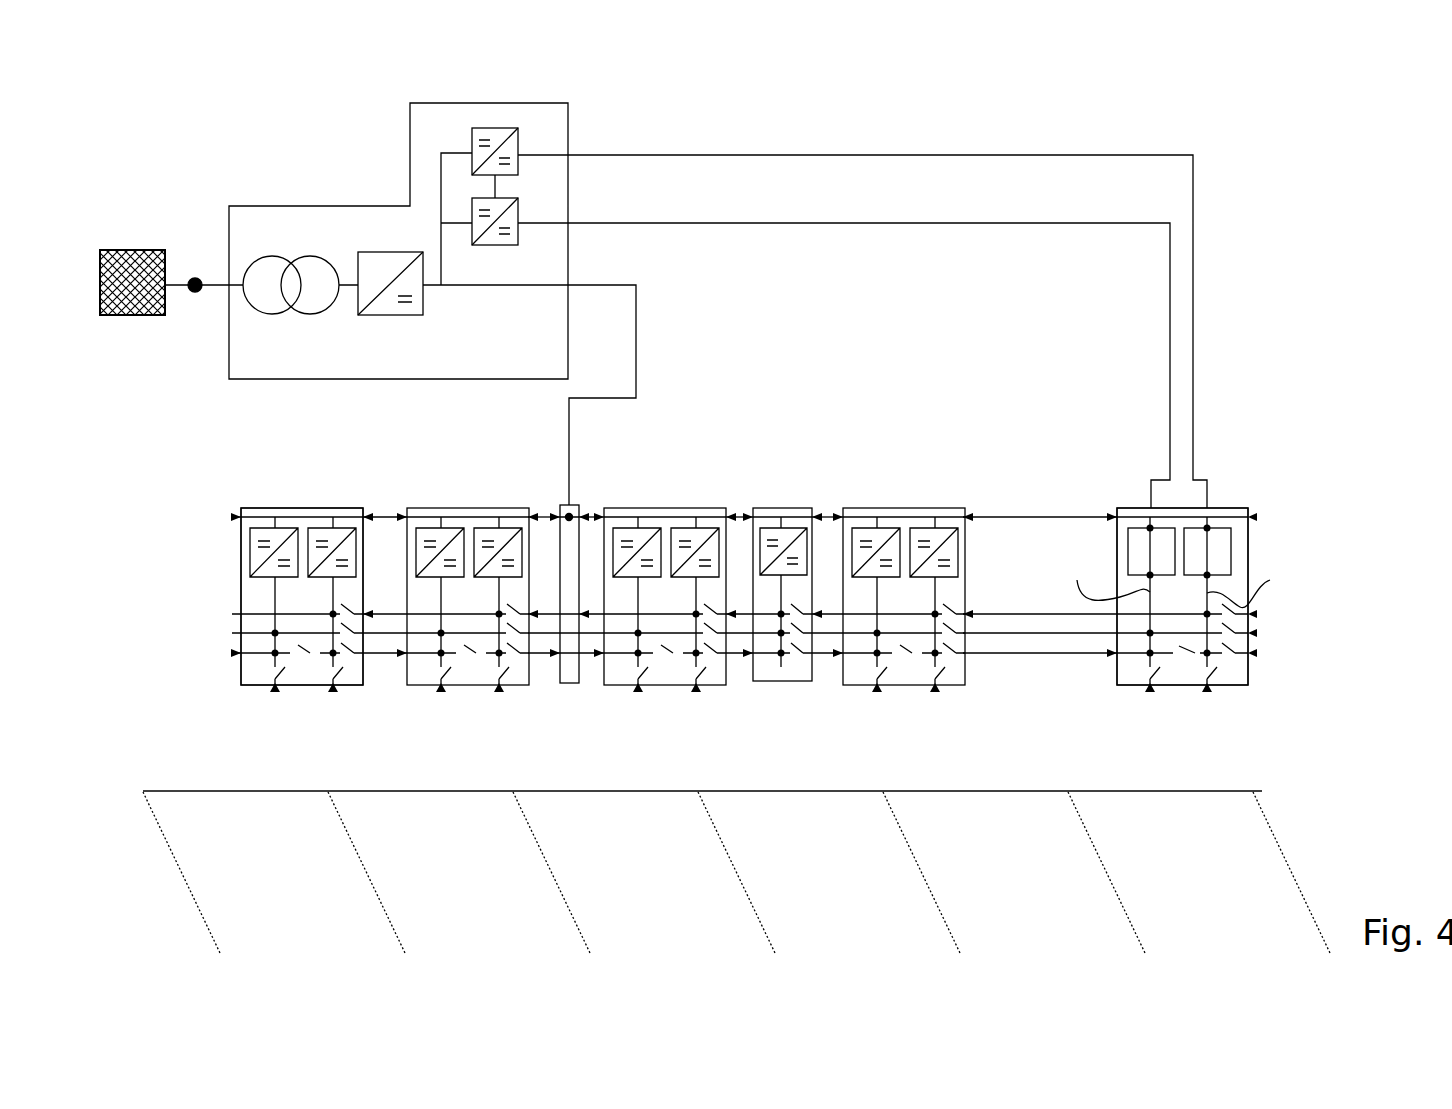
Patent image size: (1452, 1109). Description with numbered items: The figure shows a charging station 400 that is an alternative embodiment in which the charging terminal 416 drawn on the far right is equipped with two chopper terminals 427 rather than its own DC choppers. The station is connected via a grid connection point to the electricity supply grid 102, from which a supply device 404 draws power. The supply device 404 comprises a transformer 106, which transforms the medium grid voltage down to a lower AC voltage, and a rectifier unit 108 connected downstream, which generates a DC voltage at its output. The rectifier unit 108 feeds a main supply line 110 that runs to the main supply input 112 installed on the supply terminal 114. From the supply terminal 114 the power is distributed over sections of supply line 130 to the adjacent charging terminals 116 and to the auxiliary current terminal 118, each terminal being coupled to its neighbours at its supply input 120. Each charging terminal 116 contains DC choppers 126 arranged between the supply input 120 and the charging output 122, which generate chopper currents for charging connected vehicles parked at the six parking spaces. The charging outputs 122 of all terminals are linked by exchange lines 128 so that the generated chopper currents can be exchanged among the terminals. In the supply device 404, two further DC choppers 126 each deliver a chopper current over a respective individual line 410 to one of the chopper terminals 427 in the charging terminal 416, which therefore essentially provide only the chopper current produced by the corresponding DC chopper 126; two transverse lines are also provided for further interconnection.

The charging station 400 is at (1042, 84).
The supply device 404 is at (190, 211).
The electricity supply grid 102 is at (150, 317).
The transformer 106 is at (307, 313).
The rectifier unit 108 is at (397, 316).
The DC chopper 126 is at (472, 142).
The main supply line 110 is at (637, 337).
The individual line 410 is at (1170, 350).
The supply line 130 is at (1030, 515).
The exchange line 128 is at (1023, 656).
The charging output 122 is at (232, 658).
The supply input 120 is at (232, 515).
The charging terminal 116 is at (298, 505).
The main supply input 112 is at (574, 504).
The supply terminal 114 is at (569, 689).
The auxiliary current terminal 118 is at (776, 689).
The charging terminal 416 is at (1240, 485).
The chopper terminal 427 is at (1140, 528).